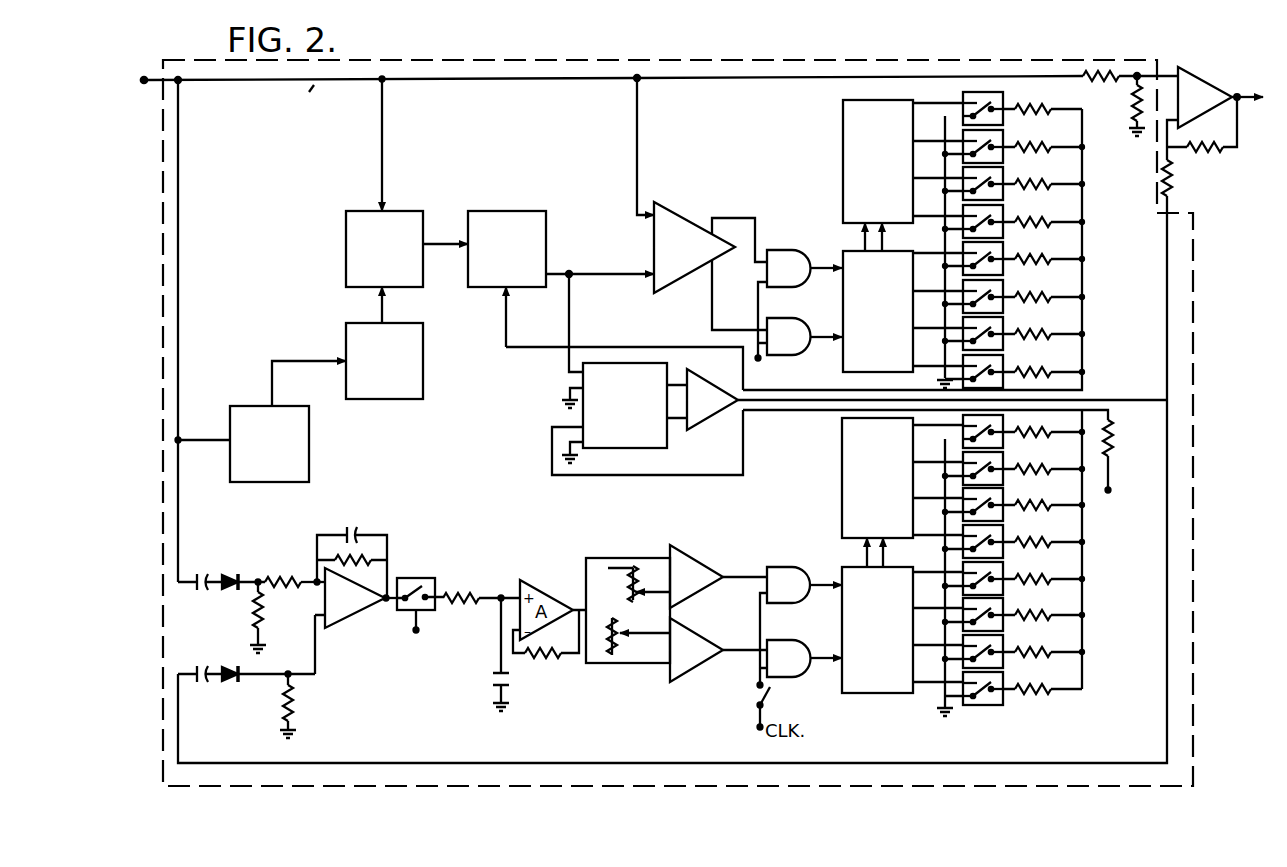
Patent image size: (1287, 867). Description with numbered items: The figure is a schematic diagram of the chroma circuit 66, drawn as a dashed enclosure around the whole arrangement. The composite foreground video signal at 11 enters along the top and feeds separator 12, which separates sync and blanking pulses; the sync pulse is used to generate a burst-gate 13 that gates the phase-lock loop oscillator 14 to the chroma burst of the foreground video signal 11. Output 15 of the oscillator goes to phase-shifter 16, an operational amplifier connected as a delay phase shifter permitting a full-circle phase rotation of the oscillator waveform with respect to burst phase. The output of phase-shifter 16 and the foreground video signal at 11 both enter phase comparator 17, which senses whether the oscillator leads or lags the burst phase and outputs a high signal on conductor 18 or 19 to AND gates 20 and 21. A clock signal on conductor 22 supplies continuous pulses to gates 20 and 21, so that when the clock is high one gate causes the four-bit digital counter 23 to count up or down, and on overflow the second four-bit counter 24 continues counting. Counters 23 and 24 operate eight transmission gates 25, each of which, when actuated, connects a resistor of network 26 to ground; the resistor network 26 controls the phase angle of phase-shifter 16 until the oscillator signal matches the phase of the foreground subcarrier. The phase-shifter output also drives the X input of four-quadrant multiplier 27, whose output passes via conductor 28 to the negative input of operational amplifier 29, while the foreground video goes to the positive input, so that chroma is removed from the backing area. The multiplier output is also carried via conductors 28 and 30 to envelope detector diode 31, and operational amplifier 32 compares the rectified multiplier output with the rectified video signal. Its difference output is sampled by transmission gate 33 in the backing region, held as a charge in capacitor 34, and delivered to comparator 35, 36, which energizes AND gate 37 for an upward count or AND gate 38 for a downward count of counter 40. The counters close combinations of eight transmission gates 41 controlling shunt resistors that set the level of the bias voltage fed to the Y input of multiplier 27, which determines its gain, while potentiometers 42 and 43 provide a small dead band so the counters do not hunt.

The composite foreground video signal 11 is at (341, 88).
The separator 12 is at (309, 436).
The burst-gate 13 is at (423, 358).
The phase-lock loop oscillator 14 is at (405, 212).
The output of the PLL oscillator 15 is at (432, 246).
The phase-shifter 16 is at (498, 213).
The phase comparator 17 is at (678, 214).
The conductor 18 is at (739, 221).
The conductor 19 is at (715, 334).
The AND gate 20 is at (773, 252).
The AND gate 21 is at (773, 320).
The conductor 22 is at (757, 361).
The 4 bit digital counter 23 is at (903, 313).
The second 4 bit counter 24 is at (903, 175).
The transmission gates 25 is at (1003, 97).
The resistor network 26 is at (1082, 205).
The four-quadrant multiplier 27 is at (666, 447).
The conductor 28 is at (1144, 400).
The operational amplifier 29 is at (1206, 92).
The conductor 30 is at (1167, 546).
The envelope detector diode 31 is at (236, 684).
The operational amplifier 32 is at (346, 619).
The transmission gate 33 is at (438, 592).
The capacitor 34 is at (511, 683).
The comparator 35 is at (701, 598).
The comparator 36 is at (702, 672).
The AND gate 37 is at (777, 571).
The AND gate 38 is at (777, 645).
The counter 40 is at (902, 492).
The transmission gates 41 is at (985, 706).
The potentiometer 42 is at (628, 610).
The potentiometer 43 is at (632, 635).
The chroma circuit 66 is at (1195, 499).